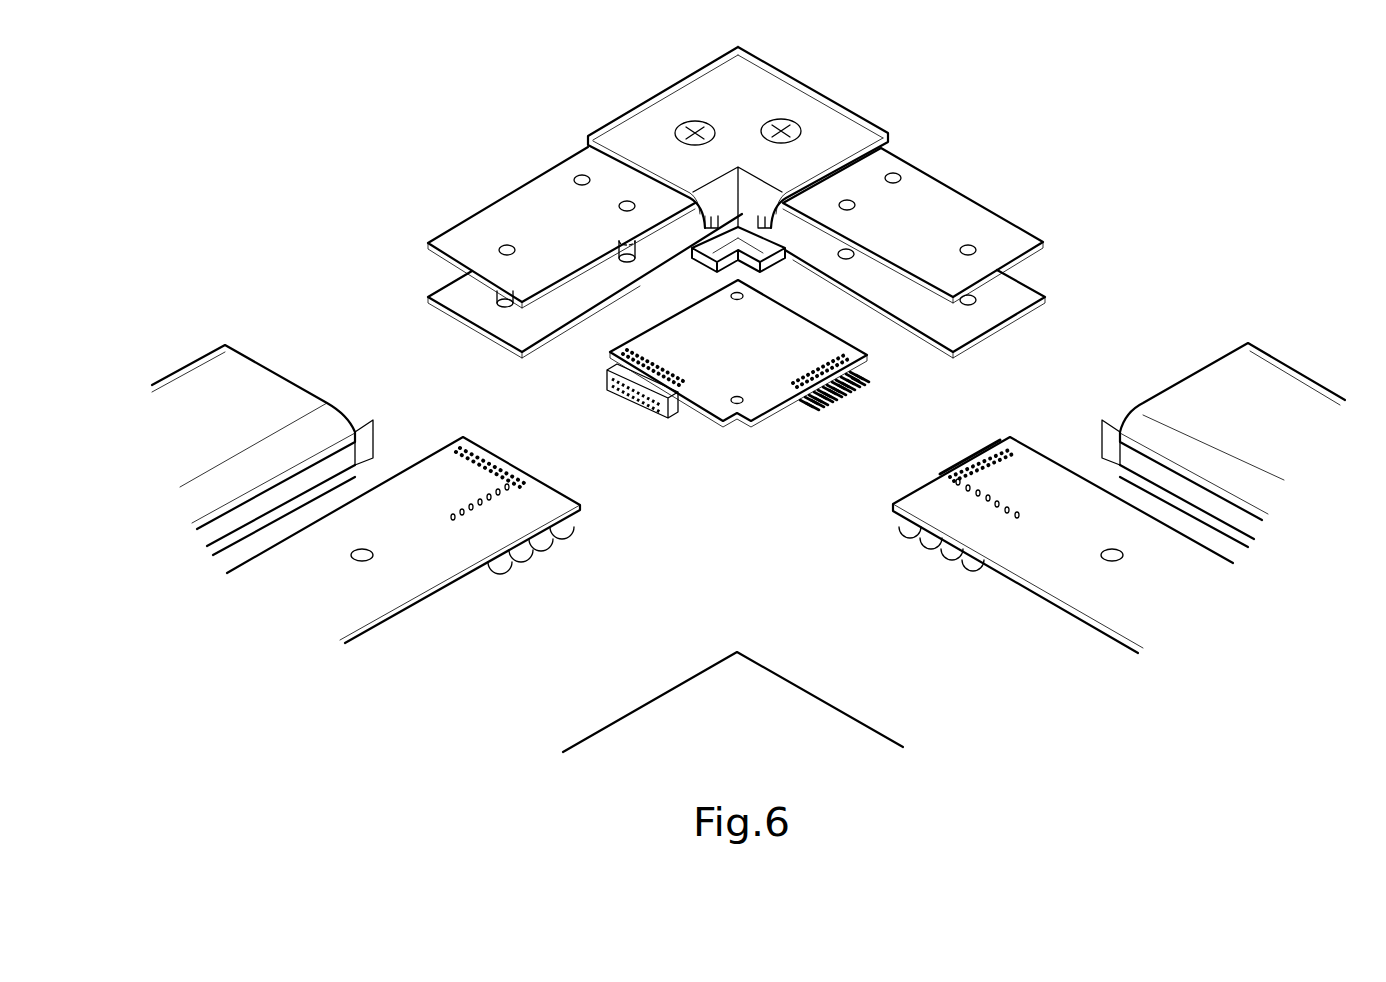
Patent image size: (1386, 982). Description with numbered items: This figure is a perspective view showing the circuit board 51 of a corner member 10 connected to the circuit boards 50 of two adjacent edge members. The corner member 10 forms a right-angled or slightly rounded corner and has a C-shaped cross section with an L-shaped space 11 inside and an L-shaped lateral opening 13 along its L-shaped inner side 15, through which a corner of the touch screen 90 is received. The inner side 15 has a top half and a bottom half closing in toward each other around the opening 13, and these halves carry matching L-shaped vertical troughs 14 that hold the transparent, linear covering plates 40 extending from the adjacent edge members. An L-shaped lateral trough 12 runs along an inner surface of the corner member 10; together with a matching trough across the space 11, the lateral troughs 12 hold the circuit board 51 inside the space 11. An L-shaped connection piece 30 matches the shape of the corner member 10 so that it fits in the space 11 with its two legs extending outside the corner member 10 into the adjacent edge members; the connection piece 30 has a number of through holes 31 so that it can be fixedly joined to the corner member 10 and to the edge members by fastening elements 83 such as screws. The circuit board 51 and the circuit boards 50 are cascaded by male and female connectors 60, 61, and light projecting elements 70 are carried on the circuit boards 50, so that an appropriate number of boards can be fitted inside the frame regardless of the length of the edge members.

The corner member 10 is at (784, 80).
The fastening element 83 is at (800, 127).
The connection piece 30 is at (957, 207).
The through hole 31 is at (900, 173).
The L-shaped space 11 is at (792, 210).
The L-shaped lateral trough 12 is at (780, 220).
The L-shaped lateral opening 13 is at (690, 258).
The L-shaped vertical trough 14 is at (762, 258).
The L-shaped inner side 15 is at (710, 215).
The circuit board 51 is at (738, 427).
The male connector 60 is at (670, 420).
The female connector 61 is at (803, 410).
The covering plate 40 is at (1099, 438).
The circuit board 50 is at (1043, 593).
The light projecting element 70 is at (977, 567).
The touch screen 90 is at (820, 707).